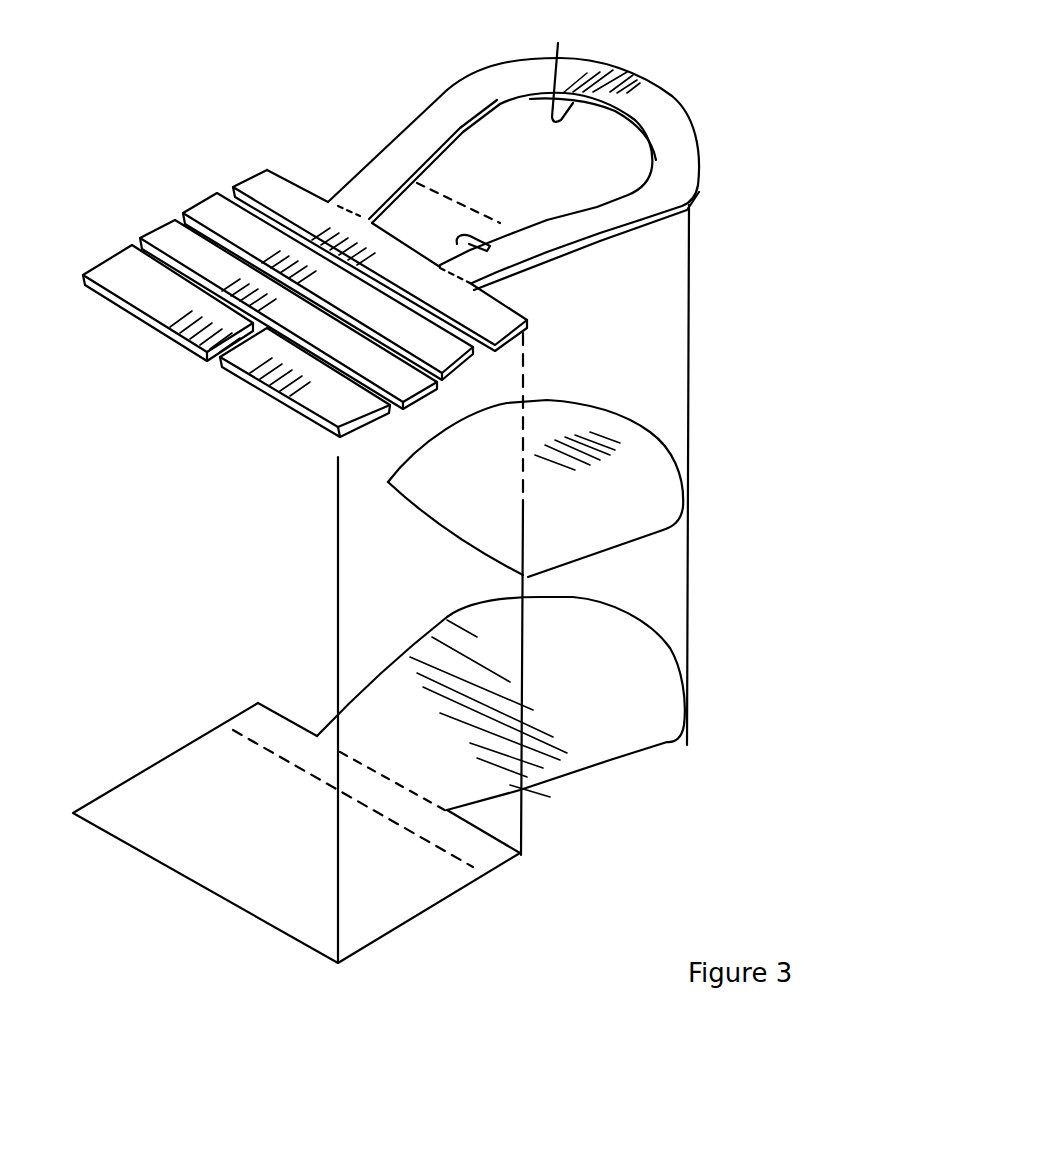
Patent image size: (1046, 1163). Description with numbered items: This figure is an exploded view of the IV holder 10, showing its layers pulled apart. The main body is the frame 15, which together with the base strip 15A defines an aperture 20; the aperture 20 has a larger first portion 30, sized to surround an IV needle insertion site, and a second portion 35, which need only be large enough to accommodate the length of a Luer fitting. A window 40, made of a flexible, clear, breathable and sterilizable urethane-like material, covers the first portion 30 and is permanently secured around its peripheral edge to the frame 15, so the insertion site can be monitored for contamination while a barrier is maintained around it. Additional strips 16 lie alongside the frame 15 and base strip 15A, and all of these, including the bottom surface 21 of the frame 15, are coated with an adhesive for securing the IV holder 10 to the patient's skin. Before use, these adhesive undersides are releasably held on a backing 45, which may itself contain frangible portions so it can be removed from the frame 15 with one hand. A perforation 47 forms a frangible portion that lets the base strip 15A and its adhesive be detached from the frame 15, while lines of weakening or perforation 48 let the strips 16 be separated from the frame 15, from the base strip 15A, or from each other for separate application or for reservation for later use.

The IV holder 10 is at (781, 234).
The frame 15 is at (658, 117).
The base strip 15A is at (270, 187).
The strips 16 is at (217, 212).
The aperture 20 is at (445, 176).
The bottom surface 21 is at (643, 226).
The first portion 30 is at (563, 63).
The second portion 35 is at (488, 248).
The window 40 is at (670, 483).
The backing 45 is at (672, 708).
The perforation 47 is at (340, 206).
The perforation 48 is at (270, 751).